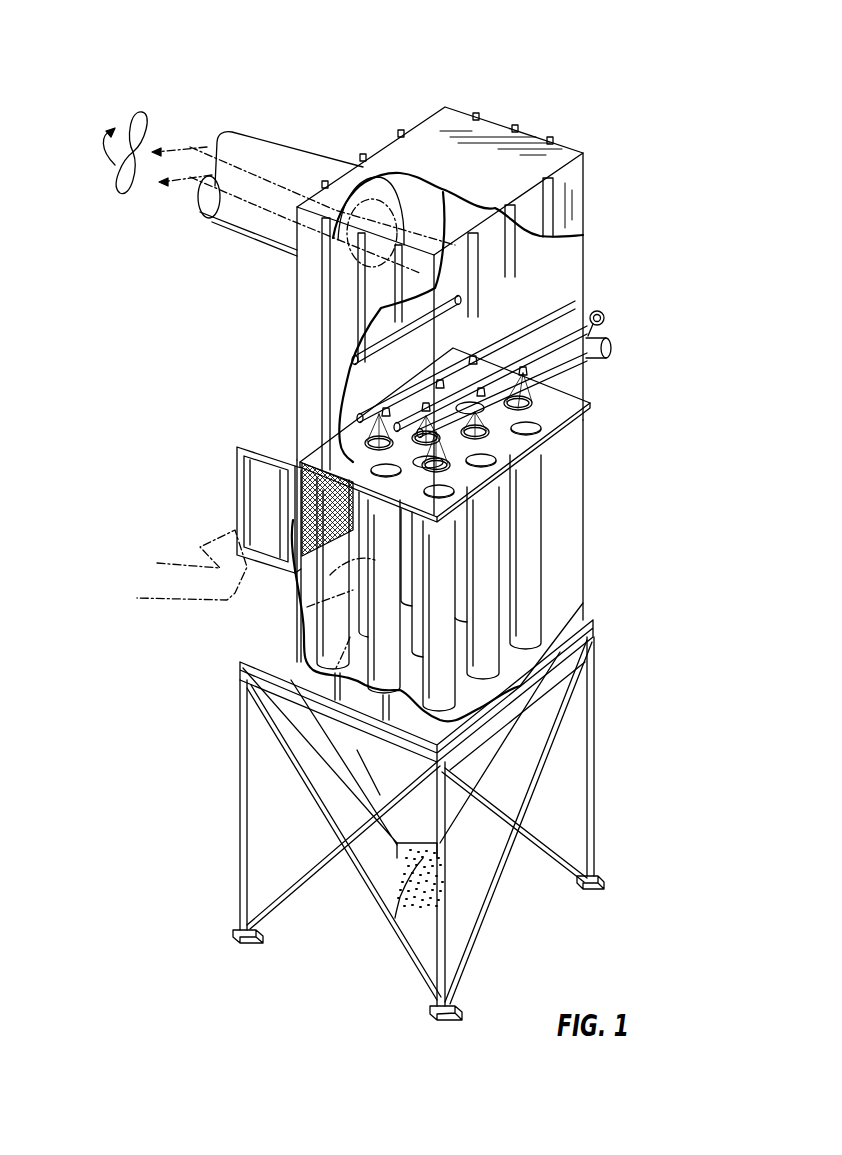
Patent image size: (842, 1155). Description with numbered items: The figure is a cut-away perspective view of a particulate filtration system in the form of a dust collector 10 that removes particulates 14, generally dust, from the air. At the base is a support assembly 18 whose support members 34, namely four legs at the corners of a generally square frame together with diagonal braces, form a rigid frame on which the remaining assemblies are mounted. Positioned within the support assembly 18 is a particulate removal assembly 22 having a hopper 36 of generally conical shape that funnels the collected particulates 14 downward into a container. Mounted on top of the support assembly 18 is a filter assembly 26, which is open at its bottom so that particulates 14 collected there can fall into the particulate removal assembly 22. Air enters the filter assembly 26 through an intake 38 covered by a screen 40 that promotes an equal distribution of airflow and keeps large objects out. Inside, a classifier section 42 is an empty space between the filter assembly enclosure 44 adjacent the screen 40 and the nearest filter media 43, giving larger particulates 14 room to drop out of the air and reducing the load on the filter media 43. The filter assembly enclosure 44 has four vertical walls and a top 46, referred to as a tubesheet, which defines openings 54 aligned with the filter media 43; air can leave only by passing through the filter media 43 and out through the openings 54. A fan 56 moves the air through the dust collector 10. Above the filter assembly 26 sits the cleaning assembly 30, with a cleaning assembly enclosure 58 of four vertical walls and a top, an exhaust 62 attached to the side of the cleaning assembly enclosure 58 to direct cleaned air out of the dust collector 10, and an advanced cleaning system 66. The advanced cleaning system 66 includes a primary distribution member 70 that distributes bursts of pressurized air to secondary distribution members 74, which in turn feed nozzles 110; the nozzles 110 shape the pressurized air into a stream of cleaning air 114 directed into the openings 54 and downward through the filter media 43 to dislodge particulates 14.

The dust collector 10 is at (690, 59).
The particulates 14 is at (176, 590).
The support assembly 18 is at (656, 730).
The particulate removal assembly 22 is at (337, 805).
The filter assembly 26 is at (686, 521).
The cleaning assembly 30 is at (694, 272).
The support members 34 is at (593, 833).
The hopper 36 is at (465, 758).
The intake 38 is at (245, 474).
The screen 40 is at (323, 494).
The classifier section 42 is at (322, 630).
The filter media 43 is at (522, 578).
The filter assembly enclosure 44 is at (565, 527).
The top 46 is at (560, 437).
The openings 54 is at (557, 407).
The fan 56 is at (147, 126).
The cleaning assembly enclosure 58 is at (562, 248).
The exhaust 62 is at (278, 164).
The advanced cleaning system 66 is at (636, 331).
The primary distribution member 70 is at (610, 344).
The secondary distribution members 74 is at (597, 318).
The nozzles 110 is at (483, 410).
The stream of cleaning air 114 is at (483, 448).